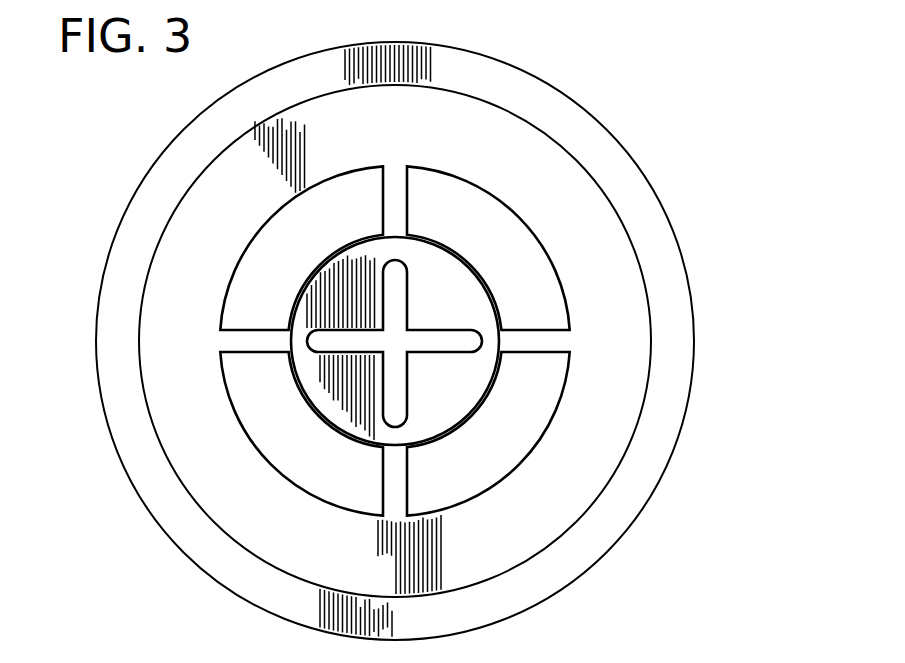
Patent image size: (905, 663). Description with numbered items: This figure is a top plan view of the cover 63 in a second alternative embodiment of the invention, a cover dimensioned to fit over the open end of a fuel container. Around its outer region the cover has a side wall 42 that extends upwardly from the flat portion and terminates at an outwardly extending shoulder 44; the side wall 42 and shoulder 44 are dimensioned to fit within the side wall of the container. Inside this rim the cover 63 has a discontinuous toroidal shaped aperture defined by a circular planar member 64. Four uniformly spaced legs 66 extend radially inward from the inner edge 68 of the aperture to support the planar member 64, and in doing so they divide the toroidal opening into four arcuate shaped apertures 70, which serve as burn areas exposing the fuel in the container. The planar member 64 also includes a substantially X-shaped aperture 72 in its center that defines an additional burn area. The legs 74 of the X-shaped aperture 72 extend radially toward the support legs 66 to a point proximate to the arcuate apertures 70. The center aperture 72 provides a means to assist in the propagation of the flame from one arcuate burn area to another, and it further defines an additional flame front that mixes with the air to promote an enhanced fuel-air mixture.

The side wall 42 is at (147, 279).
The shoulder 44 is at (105, 266).
The cover 63 is at (626, 108).
The circular planar member 64 is at (467, 394).
The legs 66 is at (400, 191).
The inner edge 68 is at (436, 356).
The arcuate shaped apertures 70 is at (526, 242).
The X-shaped aperture 72 is at (403, 330).
The legs of the aperture 74 is at (416, 355).